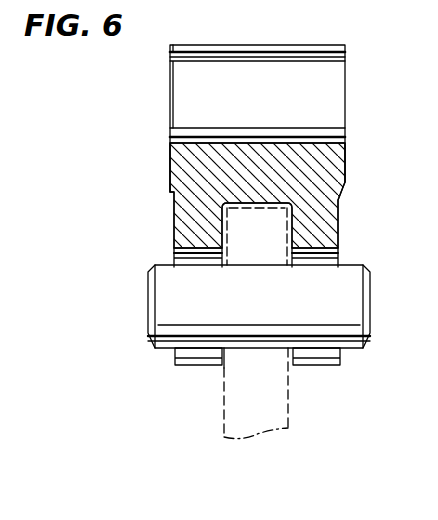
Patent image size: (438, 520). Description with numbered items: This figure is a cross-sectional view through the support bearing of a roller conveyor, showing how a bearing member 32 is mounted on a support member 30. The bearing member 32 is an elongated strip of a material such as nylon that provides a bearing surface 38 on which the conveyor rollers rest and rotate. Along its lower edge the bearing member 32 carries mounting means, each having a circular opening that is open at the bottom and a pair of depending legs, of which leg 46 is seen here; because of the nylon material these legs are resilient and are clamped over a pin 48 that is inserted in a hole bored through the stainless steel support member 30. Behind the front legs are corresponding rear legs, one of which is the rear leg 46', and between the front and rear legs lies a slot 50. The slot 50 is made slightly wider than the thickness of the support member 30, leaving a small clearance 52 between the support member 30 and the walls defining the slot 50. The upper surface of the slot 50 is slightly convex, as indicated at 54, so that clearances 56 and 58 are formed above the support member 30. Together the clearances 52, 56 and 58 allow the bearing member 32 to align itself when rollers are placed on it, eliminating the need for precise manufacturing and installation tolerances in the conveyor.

The support member 30 is at (265, 401).
The bearing member 32 is at (219, 184).
The bearing surface 38 is at (313, 104).
The leg 46 is at (365, 307).
The rear leg 46' is at (152, 355).
The pin 48 is at (271, 306).
The slot 50 is at (288, 226).
The clearance 52 is at (225, 368).
The convex upper surface of slot 54 is at (255, 207).
The clearance 56 is at (283, 203).
The clearance 58 is at (255, 209).